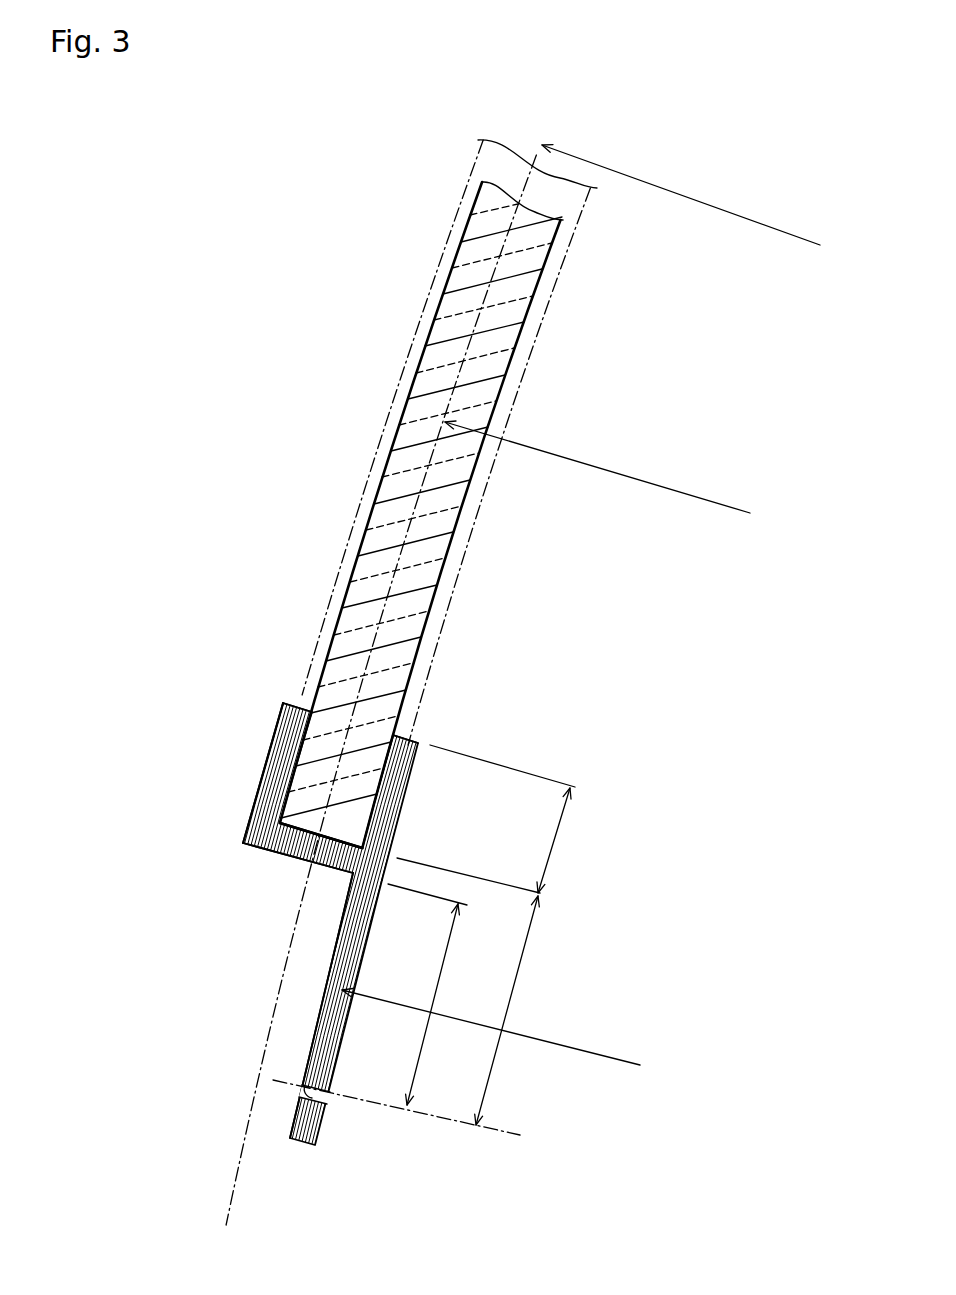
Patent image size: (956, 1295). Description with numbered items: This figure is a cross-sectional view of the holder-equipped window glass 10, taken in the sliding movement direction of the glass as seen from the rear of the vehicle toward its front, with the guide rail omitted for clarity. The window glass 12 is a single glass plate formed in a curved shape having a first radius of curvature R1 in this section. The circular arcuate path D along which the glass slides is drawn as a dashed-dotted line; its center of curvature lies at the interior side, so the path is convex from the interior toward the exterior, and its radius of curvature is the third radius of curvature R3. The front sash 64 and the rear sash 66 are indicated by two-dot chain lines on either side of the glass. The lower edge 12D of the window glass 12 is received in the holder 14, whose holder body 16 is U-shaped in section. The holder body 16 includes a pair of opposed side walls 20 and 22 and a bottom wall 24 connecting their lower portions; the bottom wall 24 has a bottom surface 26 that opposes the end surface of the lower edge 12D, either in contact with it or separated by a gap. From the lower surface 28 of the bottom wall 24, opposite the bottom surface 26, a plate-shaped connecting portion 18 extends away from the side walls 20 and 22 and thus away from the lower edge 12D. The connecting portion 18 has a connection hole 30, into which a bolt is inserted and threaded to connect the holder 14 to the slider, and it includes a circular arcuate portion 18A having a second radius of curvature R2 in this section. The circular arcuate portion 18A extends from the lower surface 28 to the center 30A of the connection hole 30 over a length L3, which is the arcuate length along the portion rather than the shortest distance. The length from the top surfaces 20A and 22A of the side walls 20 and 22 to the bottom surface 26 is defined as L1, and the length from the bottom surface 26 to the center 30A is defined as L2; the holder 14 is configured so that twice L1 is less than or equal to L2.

The holder-equipped window glass 10 is at (312, 188).
The window glass 12 is at (410, 416).
The lower edge 12D is at (250, 833).
The holder 14 is at (228, 747).
The holder body 16 is at (257, 793).
The connecting portion 18 is at (375, 961).
The circular arcuate portion 18A is at (317, 1005).
The side wall 20 is at (280, 720).
The top surface 20A is at (295, 702).
The side wall 22 is at (406, 797).
The top surface 22A is at (415, 738).
The bottom wall 24 is at (277, 857).
The bottom surface 26 is at (340, 832).
The lower surface 28 is at (298, 862).
The connection hole 30 is at (303, 1092).
The center of the connection hole 30A is at (422, 1119).
The front sash 64 is at (420, 314).
The rear sash 66 is at (499, 466).
The circular arcuate path D is at (681, 176).
The first radius of curvature R1 is at (597, 467).
The second radius of curvature R2 is at (491, 1027).
The third radius of curvature R3 is at (787, 216).
The length L1 is at (491, 819).
The length L2 is at (510, 1010).
The length L3 is at (429, 994).